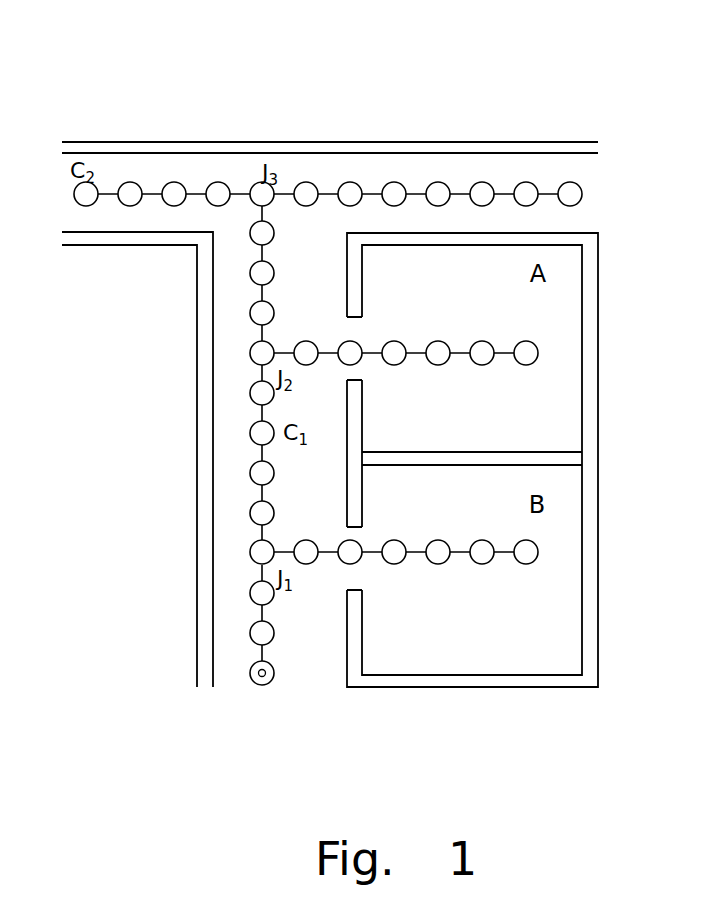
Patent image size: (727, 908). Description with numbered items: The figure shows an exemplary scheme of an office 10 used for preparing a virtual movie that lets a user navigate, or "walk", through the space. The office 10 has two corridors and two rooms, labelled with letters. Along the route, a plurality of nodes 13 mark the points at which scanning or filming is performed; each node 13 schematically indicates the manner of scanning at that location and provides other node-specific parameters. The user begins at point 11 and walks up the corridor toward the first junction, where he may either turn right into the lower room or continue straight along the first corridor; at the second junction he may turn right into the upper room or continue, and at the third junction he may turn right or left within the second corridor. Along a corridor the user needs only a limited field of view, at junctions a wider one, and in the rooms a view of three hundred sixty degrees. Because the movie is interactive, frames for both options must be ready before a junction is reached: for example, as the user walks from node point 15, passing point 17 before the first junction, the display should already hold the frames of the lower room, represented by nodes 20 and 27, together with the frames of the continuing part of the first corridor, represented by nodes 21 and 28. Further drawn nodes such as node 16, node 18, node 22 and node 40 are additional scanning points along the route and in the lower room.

The office 10 is at (367, 108).
The nodes 13 is at (128, 182).
The node 28 is at (250, 469).
The node 21 is at (249, 509).
The junction node J1 18 is at (249, 553).
The point 17 is at (252, 597).
The node 16 is at (251, 638).
The node point 15 is at (252, 679).
The point 11 is at (270, 677).
The node 20 is at (304, 540).
The node 27 is at (357, 562).
The node 22 is at (476, 546).
The end node 40 is at (524, 563).